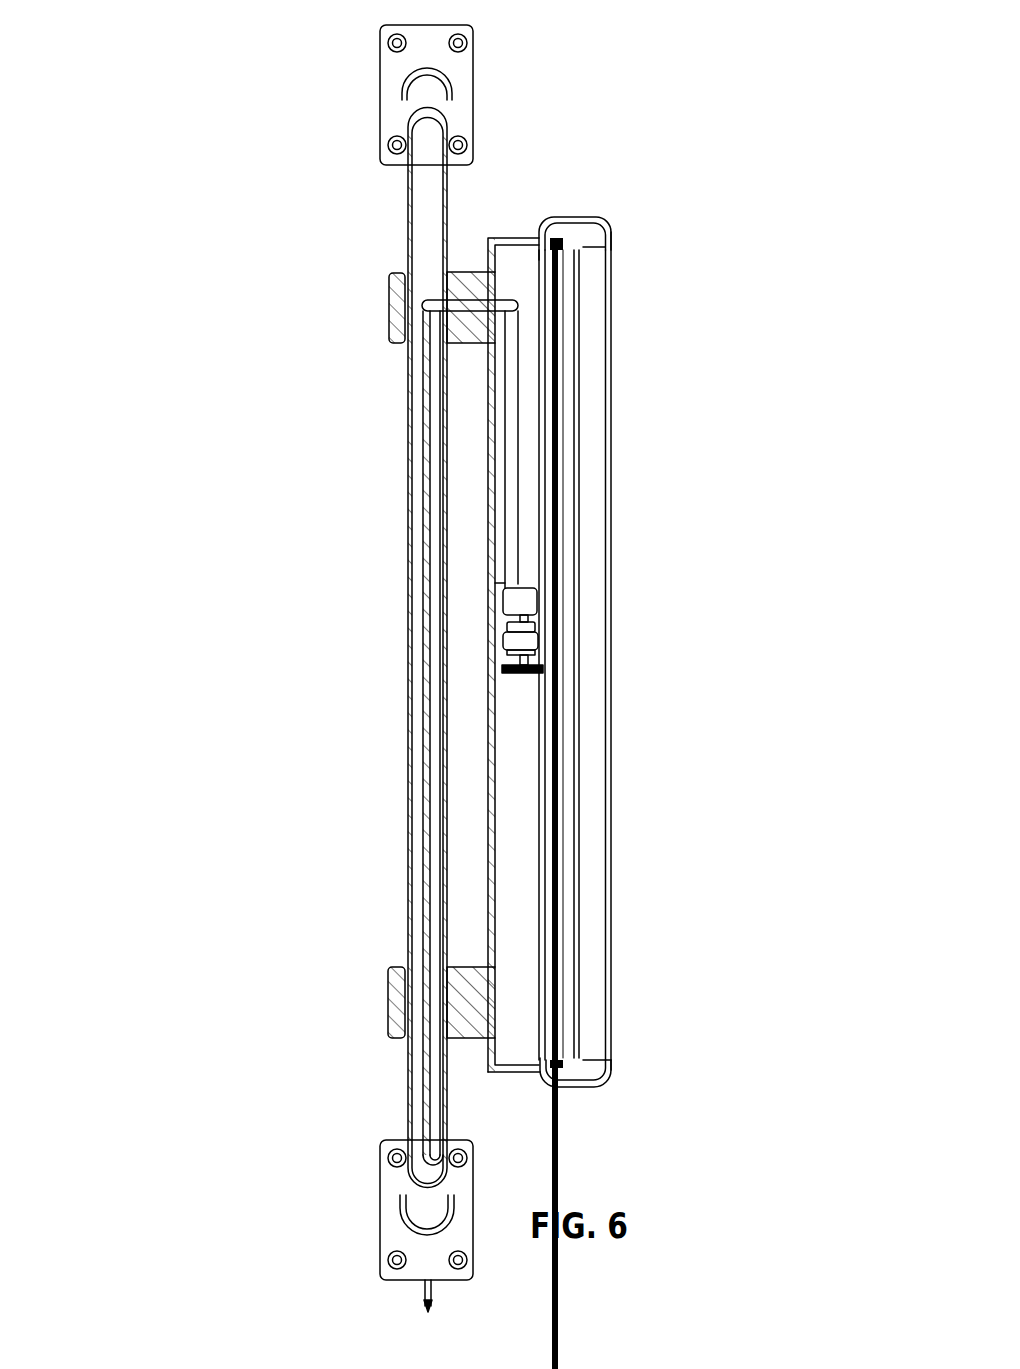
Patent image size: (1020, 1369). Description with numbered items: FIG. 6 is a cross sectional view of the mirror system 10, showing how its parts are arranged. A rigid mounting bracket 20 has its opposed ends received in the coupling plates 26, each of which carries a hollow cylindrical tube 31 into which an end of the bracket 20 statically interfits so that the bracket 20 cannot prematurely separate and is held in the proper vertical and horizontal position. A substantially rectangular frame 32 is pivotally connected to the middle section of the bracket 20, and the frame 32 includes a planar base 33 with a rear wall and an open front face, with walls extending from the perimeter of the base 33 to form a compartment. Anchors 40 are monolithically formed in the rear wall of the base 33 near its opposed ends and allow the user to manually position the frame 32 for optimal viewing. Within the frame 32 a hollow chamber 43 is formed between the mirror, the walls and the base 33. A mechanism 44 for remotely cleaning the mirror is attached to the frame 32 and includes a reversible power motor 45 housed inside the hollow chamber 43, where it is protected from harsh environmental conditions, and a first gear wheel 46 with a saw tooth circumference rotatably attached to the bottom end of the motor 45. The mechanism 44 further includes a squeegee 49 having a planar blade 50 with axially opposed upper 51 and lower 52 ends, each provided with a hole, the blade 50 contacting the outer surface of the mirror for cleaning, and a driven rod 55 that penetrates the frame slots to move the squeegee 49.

The system 10 is at (160, 231).
The rigid mounting bracket 20 is at (349, 710).
The coupling plates 26 is at (414, 662).
The hollow cylindrical tube 31 is at (450, 88).
The frame 32 is at (515, 705).
The planar base 33 is at (385, 732).
The anchors 40 is at (392, 332).
The hollow chamber 43 is at (522, 268).
The mechanism for remotely cleaning the mirror 44 is at (521, 709).
The reversible power motor 45 is at (548, 627).
The first gear wheel 46 is at (532, 676).
The squeegee 49 is at (668, 651).
The planar blade 50 is at (560, 985).
The upper end 51 is at (615, 247).
The lower end 52 is at (607, 1063).
The driven rod 55 is at (624, 196).